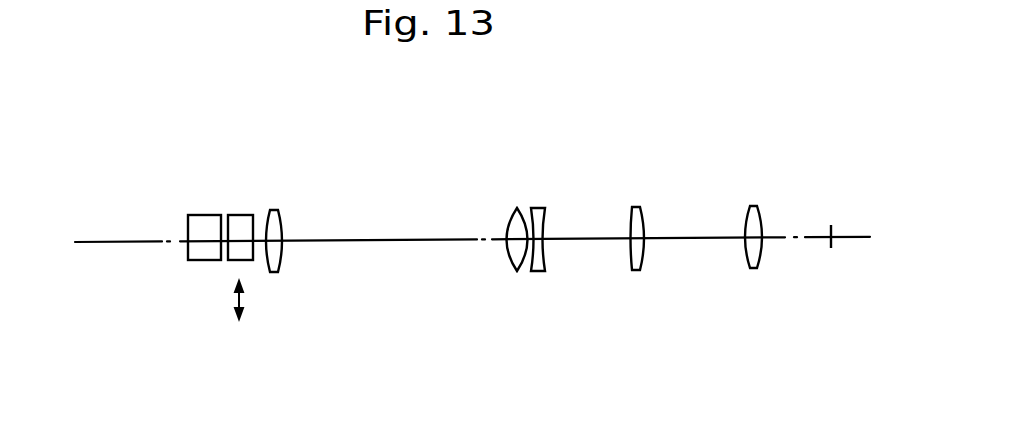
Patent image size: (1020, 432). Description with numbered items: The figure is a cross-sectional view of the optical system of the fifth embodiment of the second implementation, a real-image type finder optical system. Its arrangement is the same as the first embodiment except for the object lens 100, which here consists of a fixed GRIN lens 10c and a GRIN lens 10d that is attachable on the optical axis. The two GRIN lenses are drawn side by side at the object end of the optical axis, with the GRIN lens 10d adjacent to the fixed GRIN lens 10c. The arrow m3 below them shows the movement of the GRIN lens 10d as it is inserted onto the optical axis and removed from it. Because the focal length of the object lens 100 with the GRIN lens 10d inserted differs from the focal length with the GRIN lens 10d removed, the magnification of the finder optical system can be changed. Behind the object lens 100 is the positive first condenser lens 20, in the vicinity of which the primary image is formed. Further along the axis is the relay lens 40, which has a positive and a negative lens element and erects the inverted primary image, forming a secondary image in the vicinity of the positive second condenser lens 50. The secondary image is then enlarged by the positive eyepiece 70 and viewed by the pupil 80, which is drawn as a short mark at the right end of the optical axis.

The fixed GRIN lens 10c is at (203, 215).
The GRIN lens attachable on the optical axis 10d is at (240, 213).
The first condenser lens 20 is at (282, 218).
The relay lens 40 is at (550, 172).
The second condenser lens 50 is at (631, 209).
The eyepiece 70 is at (748, 217).
The pupil 80 is at (832, 224).
The object lens 100 is at (207, 239).
The arrow showing movement of the GRIN lens m3 is at (243, 298).